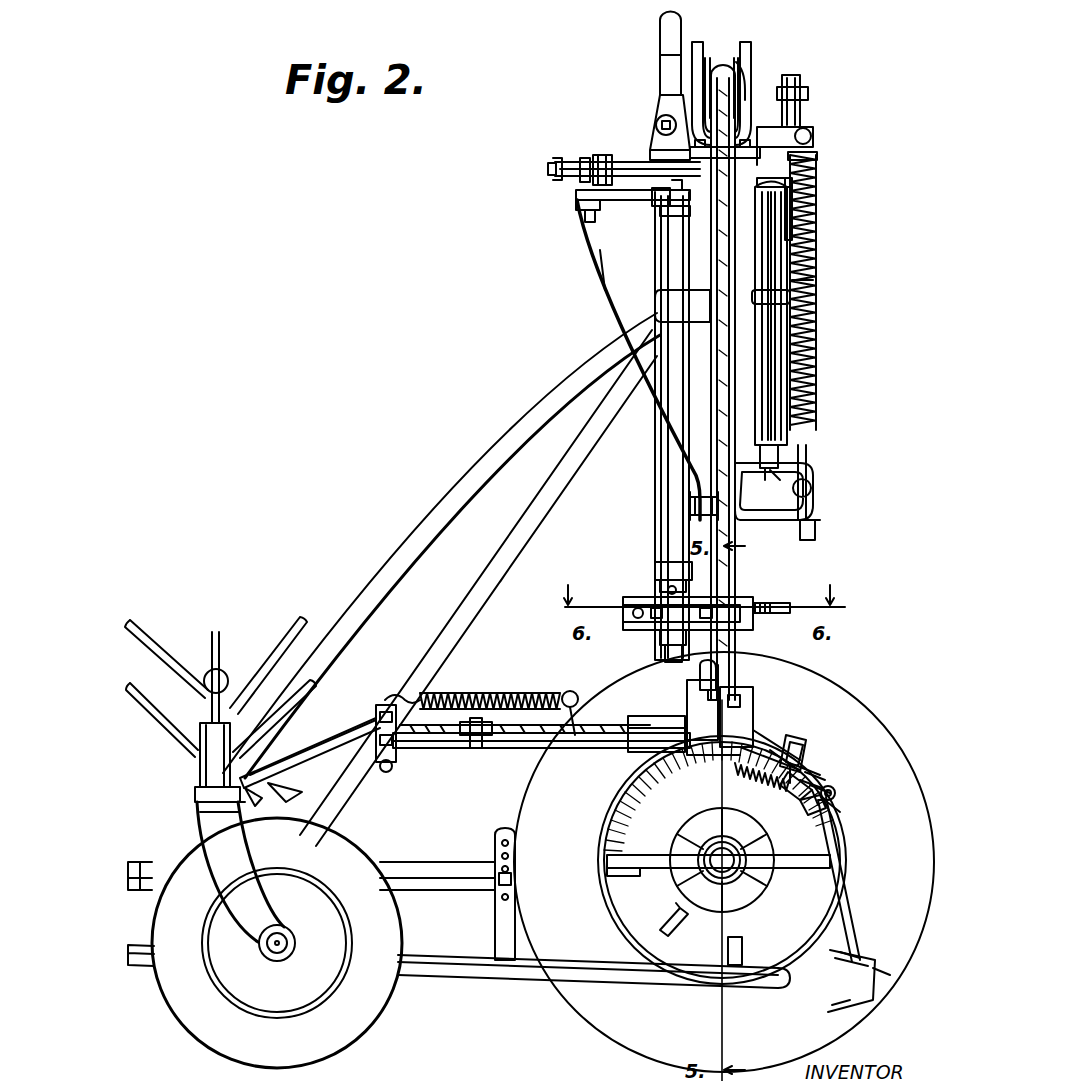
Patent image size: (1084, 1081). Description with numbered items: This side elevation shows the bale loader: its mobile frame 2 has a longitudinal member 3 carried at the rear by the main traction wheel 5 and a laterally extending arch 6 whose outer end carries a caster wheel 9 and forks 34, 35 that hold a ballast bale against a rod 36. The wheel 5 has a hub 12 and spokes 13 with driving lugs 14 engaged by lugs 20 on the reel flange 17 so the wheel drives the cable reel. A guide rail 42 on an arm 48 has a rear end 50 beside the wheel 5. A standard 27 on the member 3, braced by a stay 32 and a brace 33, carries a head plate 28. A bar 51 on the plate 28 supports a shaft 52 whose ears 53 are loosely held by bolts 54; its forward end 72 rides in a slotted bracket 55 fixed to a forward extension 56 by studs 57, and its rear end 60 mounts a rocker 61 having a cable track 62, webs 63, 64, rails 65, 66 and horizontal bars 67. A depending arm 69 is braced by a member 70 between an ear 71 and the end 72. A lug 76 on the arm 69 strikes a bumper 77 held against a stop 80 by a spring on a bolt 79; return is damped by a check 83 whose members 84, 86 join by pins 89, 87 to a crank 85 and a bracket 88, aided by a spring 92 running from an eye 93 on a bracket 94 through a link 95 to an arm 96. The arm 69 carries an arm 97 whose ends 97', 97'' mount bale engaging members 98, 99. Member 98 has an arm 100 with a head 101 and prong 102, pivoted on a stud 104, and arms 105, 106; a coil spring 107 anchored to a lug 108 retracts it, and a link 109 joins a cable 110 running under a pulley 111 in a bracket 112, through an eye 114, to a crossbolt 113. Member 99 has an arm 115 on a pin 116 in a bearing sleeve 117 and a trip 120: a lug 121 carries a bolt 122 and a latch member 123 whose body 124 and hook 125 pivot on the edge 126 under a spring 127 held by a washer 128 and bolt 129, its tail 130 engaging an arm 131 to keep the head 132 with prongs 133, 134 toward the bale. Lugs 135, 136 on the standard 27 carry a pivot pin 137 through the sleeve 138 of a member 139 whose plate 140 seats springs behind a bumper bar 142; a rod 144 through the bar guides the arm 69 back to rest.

The caster fork 2 is at (200, 790).
The frame bar 3 is at (428, 862).
The drum 5 is at (588, 1005).
The eye loop 6 is at (222, 670).
The caster wheel 9 is at (365, 1005).
The hub 12 is at (748, 872).
The cross bar 13 is at (648, 868).
The bracket 14 is at (742, 945).
The drum rim 17 is at (645, 915).
The lug 20 is at (670, 932).
The mast tube 27 is at (658, 489).
The bracket 28 is at (585, 210).
The brace 32 is at (466, 590).
The brace 33 is at (406, 530).
The arm 34 is at (132, 625).
The arm 35 is at (130, 700).
The rod 36 is at (212, 642).
The lower bar 42 is at (460, 968).
The upright bracket 48 is at (495, 916).
The bar end 50 is at (790, 980).
The clamp 51 is at (655, 205).
The hub 52 is at (592, 165).
The shaft 53 is at (648, 165).
The clamp 54 is at (665, 215).
The collar 55 is at (584, 158).
The plate 56 is at (576, 194).
The tube 57 is at (602, 285).
The sleeve 60 is at (793, 180).
The fork arm 61 is at (750, 48).
The threaded rod 62 is at (736, 125).
The fork arm 63 is at (700, 40).
The fork arm 64 is at (743, 40).
The inner arm 65 is at (712, 42).
The inner arm 66 is at (752, 62).
The spring seat 67 is at (816, 156).
The collar 69 is at (757, 250).
The bent tube 70 is at (595, 260).
The clamp 71 is at (690, 506).
The shaft end 72 is at (547, 162).
The bracket 76 is at (680, 300).
The arm 77 is at (658, 20).
The pin 79 is at (658, 120).
The block 80 is at (655, 100).
The spring 83 is at (812, 284).
The cylinder 84 is at (772, 210).
The ring 85 is at (812, 134).
The piston rod 86 is at (772, 365).
The clamp 87 is at (778, 452).
The pin 88 is at (775, 470).
The cap 89 is at (780, 130).
The spring 92 is at (812, 256).
The bracket 93 is at (812, 508).
The bolt 94 is at (816, 528).
The nut 95 is at (800, 108).
The stud 96 is at (796, 90).
The rod 97 is at (541, 756).
The threaded rod 97' is at (525, 752).
The link 97'' is at (778, 727).
The arm 98 is at (248, 765).
The bracket 99 is at (862, 958).
The arm 100 is at (300, 738).
The lug 101 is at (245, 792).
The lug 102 is at (280, 784).
The bracket 104 is at (380, 708).
The hook 105 is at (390, 690).
The pivot 106 is at (388, 762).
The spring 107 is at (488, 692).
The eye 108 is at (572, 700).
The nut 109 is at (440, 740).
The coupling 110 is at (612, 725).
The clevis 111 is at (688, 700).
The bracket 112 is at (735, 720).
The plate 113 is at (690, 148).
The pin 114 is at (722, 680).
The bar 115 is at (838, 905).
The pivot 116 is at (838, 784).
The pin 117 is at (838, 795).
The plate 120 is at (815, 775).
The plate 121 is at (818, 786).
The plate 122 is at (810, 765).
The block 123 is at (812, 810).
The block 124 is at (795, 790).
The block 125 is at (800, 738).
The block 126 is at (805, 745).
The link 127 is at (778, 748).
The spring 128 is at (738, 772).
The spring end 129 is at (785, 778).
The link 130 is at (838, 812).
The plate 131 is at (828, 792).
The bracket 132 is at (872, 980).
The bracket 133 is at (832, 950).
The bracket 134 is at (850, 1005).
The clamp 135 is at (660, 570).
The clamp 136 is at (660, 640).
The clamp 137 is at (665, 656).
The clamp 138 is at (660, 578).
The nut 139 is at (680, 590).
The plate 140 is at (632, 606).
The plate 142 is at (645, 617).
The rod 144 is at (768, 602).